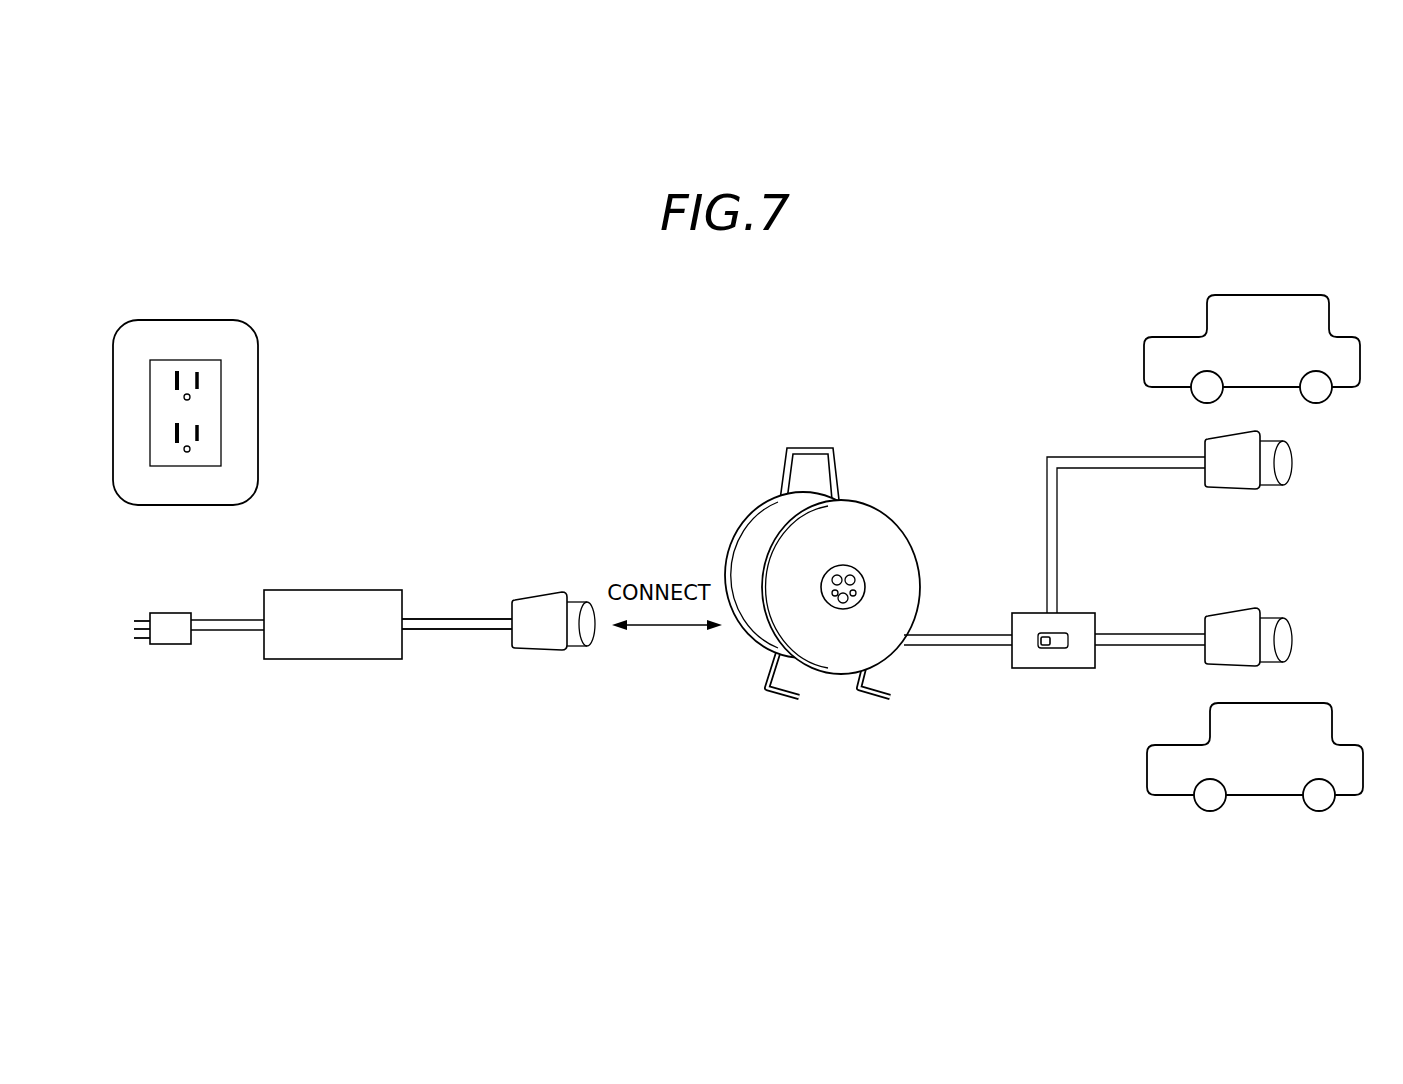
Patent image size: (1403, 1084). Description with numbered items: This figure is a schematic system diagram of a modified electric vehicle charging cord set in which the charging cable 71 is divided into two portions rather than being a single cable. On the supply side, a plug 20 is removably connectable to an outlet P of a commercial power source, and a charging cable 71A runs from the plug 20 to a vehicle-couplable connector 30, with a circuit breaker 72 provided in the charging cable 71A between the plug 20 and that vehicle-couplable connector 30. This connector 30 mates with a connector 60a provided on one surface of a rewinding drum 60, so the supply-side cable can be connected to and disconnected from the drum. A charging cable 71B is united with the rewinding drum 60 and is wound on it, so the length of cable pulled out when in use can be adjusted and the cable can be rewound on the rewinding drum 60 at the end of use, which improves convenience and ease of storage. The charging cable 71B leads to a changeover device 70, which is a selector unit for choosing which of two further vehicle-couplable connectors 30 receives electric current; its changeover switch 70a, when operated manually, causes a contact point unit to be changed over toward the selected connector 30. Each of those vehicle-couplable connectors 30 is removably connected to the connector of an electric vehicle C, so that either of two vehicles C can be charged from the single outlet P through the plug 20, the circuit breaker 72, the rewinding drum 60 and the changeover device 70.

The plug 20 is at (173, 617).
The vehicle-couplable connector 30 is at (544, 603).
The rewinding drum 60 is at (897, 522).
The connector 60a is at (865, 585).
The changeover device 70 is at (1037, 612).
The changeover switch 70a is at (1062, 632).
The charging cable 71 is at (467, 614).
The charging cable 71A is at (438, 627).
The charging cable 71B is at (955, 642).
The circuit breaker 72 is at (323, 589).
The outlet P is at (255, 355).
The electric vehicle C is at (1299, 305).